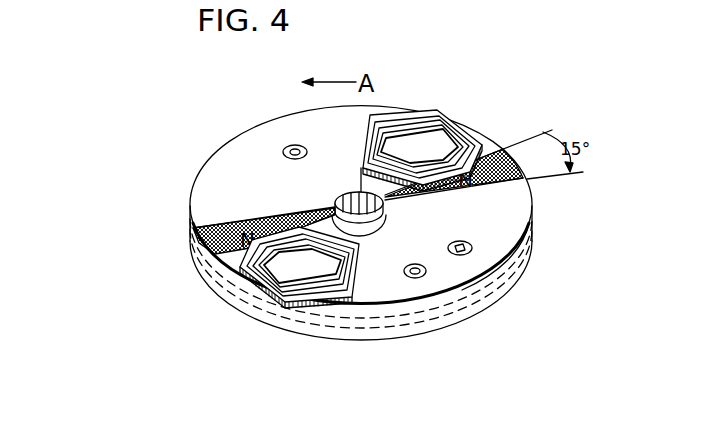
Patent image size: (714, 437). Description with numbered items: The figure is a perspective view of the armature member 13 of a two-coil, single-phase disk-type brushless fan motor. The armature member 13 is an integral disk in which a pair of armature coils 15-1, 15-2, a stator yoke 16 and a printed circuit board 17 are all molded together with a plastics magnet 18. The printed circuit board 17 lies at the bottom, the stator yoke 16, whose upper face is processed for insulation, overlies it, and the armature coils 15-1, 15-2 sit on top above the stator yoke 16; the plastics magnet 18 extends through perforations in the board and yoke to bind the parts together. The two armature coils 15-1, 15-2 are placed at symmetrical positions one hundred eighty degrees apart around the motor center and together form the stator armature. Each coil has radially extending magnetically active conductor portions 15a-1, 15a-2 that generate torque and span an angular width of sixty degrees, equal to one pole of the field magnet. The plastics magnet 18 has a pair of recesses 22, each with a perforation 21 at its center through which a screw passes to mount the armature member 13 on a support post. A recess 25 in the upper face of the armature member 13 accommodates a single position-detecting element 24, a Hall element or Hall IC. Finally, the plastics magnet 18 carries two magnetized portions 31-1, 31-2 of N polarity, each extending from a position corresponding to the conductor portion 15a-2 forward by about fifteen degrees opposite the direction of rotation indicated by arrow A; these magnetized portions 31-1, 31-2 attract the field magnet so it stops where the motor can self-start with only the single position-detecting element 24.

The armature member 13 is at (427, 112).
The armature coil 15-1 is at (453, 137).
The armature coil 15-2 is at (346, 302).
The radially extending magnetically active conductor portion 15a-1 is at (378, 140).
The radially extending magnetically active conductor portion 15a-2 is at (492, 138).
The field magnet attracting and repulsing, torque-generating magnetized portion 31-1 is at (528, 181).
The field magnet attracting and repulsing, torque-generating magnetized portion 31-2 is at (198, 242).
The stator yoke 16 is at (418, 338).
The printed circuit board 17 is at (462, 327).
The plastics magnet 18 is at (380, 292).
The perforation 21 is at (462, 291).
The recess 22 is at (426, 273).
The position-detecting element 24 is at (472, 247).
The recess 25 is at (520, 268).